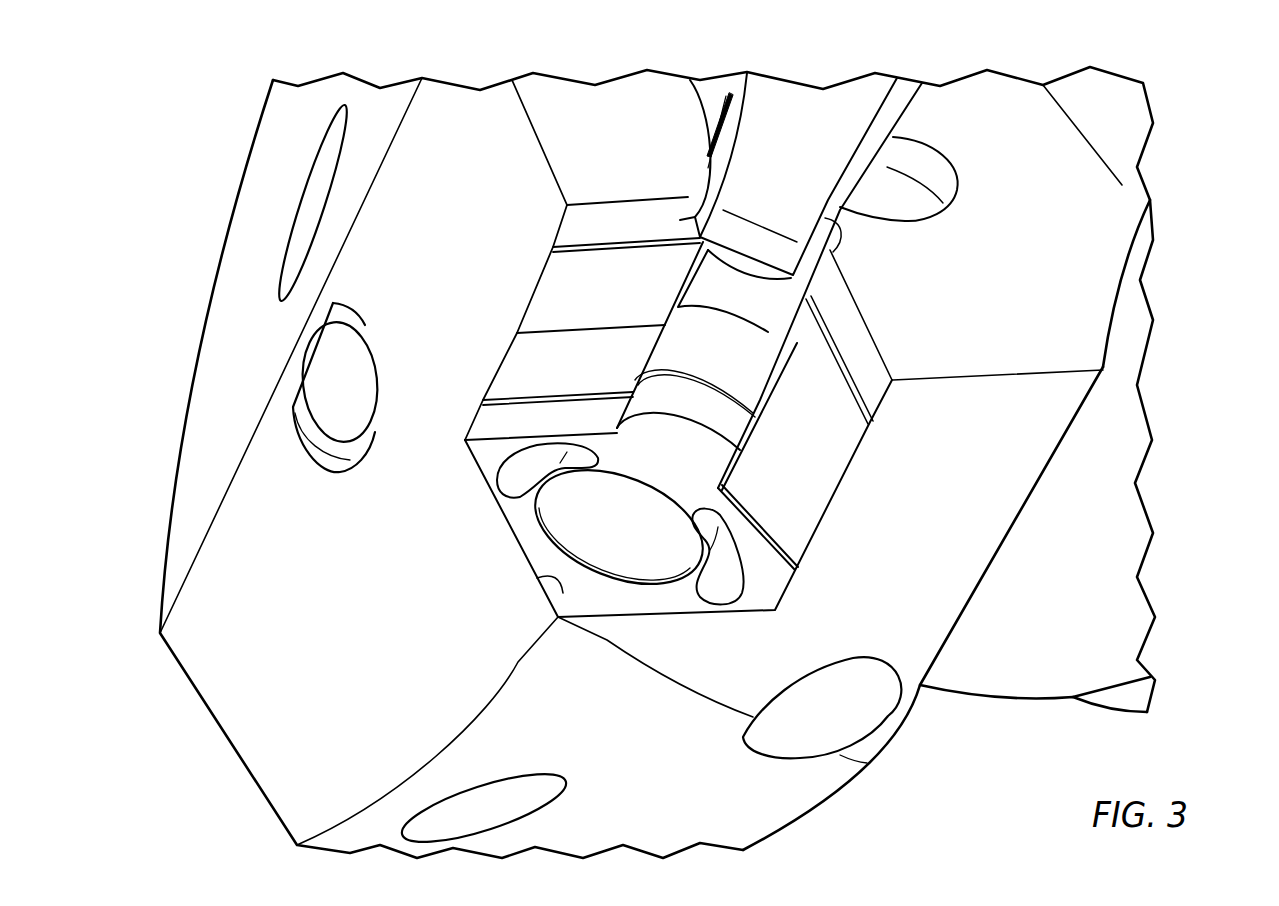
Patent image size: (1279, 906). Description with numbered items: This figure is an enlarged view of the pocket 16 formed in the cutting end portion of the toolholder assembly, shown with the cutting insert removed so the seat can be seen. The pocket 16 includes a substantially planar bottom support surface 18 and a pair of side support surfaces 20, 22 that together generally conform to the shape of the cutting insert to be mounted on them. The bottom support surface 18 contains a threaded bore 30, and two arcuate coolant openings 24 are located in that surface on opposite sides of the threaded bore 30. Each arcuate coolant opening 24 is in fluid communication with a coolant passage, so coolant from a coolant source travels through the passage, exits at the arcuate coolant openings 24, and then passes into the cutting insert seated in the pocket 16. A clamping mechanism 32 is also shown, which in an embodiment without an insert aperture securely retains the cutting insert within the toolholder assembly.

The pocket 16 is at (478, 503).
The bottom support surface 18 is at (537, 578).
The side support surface 20 is at (570, 284).
The side support surface 22 is at (837, 430).
The arcuate coolant opening 24 is at (512, 473).
The threaded bore 30 is at (623, 508).
The clamping mechanism 32 is at (927, 113).